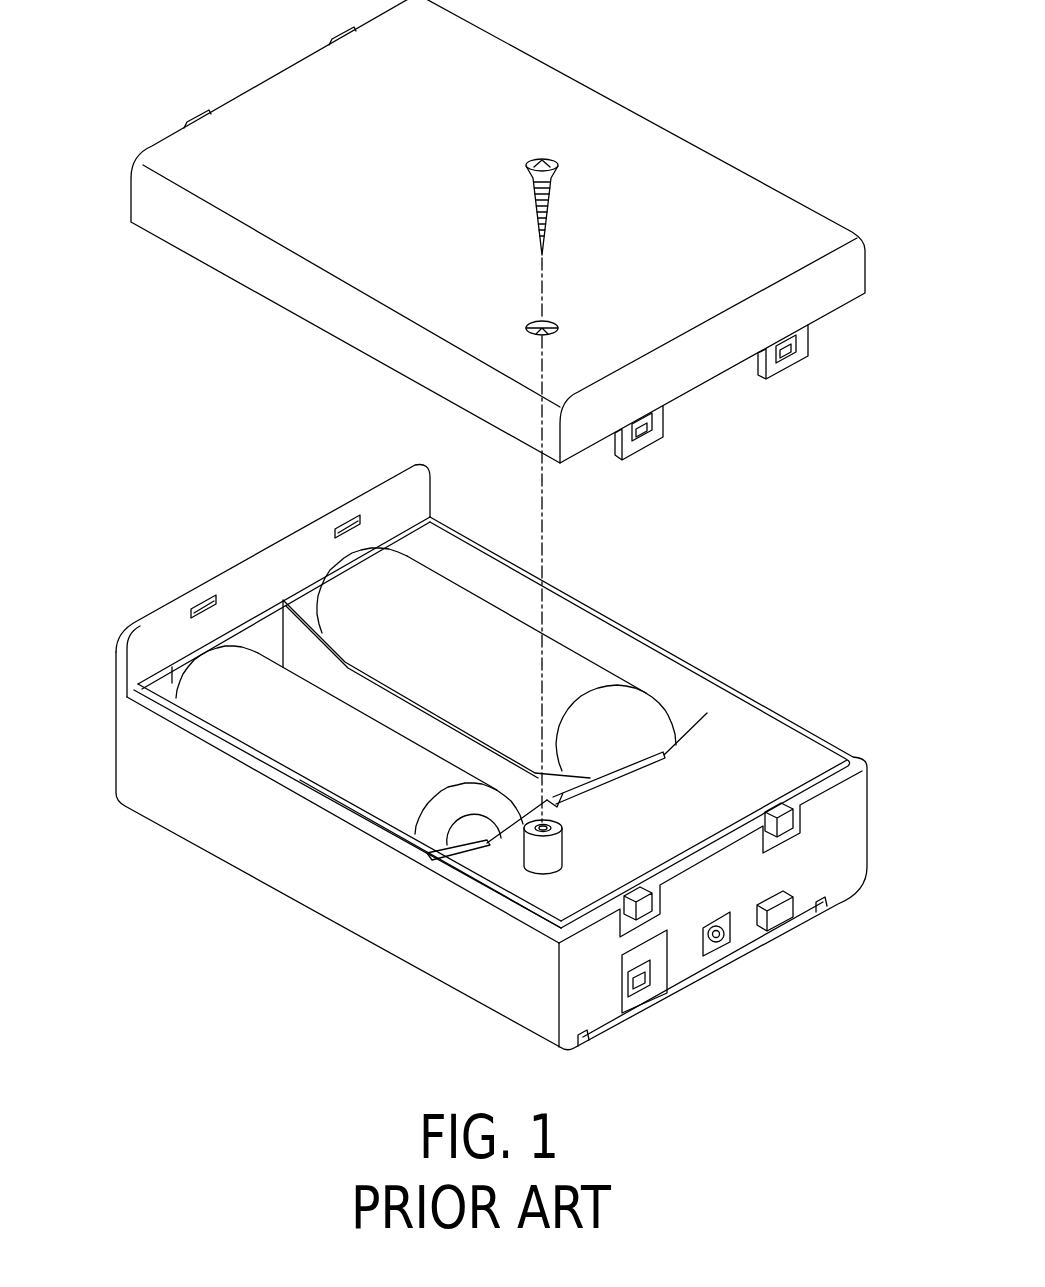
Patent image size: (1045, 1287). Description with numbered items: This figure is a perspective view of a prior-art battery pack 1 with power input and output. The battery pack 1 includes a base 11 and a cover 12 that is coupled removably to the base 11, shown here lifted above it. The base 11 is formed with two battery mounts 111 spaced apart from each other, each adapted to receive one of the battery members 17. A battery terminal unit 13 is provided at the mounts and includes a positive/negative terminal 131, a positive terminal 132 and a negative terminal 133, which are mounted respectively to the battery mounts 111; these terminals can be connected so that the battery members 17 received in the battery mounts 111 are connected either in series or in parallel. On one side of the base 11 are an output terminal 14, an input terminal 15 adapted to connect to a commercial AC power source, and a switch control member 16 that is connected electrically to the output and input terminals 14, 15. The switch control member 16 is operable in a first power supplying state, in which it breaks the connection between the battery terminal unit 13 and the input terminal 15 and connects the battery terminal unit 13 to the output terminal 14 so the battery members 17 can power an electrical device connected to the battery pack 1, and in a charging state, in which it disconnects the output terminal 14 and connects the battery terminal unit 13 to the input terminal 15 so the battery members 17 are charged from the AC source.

The battery pack 1 is at (158, 62).
The base 11 is at (491, 783).
The battery mounts 111 is at (635, 655).
The cover 12 is at (735, 187).
The battery terminal unit 13 is at (452, 642).
The positive/negative terminal 131 is at (188, 652).
The positive terminal 132 is at (443, 863).
The negative terminal 133 is at (693, 720).
The output terminal 14 is at (650, 980).
The input terminal 15 is at (717, 947).
The switch control member 16 is at (770, 923).
The battery members 17 is at (230, 657).